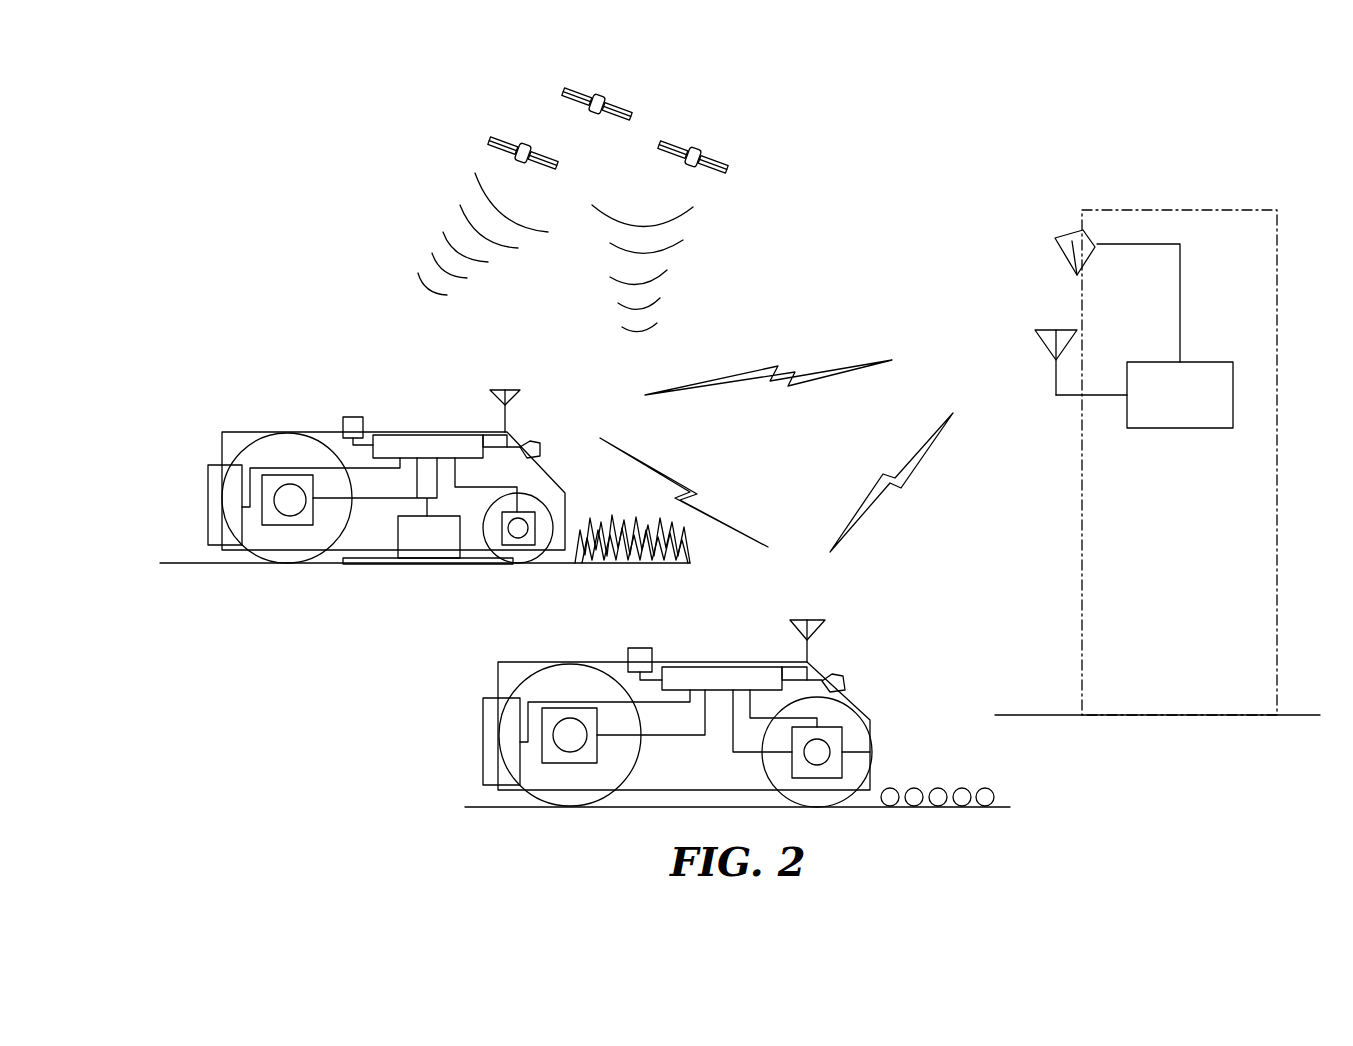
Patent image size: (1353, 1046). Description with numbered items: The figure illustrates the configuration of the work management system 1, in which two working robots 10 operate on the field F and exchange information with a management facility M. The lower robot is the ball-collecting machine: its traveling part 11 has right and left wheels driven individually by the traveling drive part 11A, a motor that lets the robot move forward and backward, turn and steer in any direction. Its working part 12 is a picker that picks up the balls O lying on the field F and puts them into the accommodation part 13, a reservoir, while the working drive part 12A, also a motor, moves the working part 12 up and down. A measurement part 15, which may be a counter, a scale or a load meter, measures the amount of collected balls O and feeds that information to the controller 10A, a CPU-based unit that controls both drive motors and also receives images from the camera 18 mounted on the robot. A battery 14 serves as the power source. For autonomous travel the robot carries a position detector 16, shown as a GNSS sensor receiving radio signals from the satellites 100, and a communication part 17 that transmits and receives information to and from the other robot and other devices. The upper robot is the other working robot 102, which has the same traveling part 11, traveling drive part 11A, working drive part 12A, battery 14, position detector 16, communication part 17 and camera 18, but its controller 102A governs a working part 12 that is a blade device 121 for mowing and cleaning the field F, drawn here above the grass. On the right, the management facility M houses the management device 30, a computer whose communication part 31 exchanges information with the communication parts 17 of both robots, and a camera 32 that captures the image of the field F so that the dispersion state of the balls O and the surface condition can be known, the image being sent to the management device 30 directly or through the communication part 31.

The work management system 1 is at (898, 226).
The satellites 100 is at (728, 78).
The management facility M is at (1170, 210).
The management device 30 is at (1233, 395).
The communication part 31 is at (1050, 328).
The camera 32 is at (1063, 268).
The working robot 10 is at (240, 428).
The working robot 102 is at (508, 590).
The controller 10A is at (445, 435).
The controller 102A is at (590, 514).
The traveling part 11 is at (248, 438).
The traveling drive part 11A is at (290, 515).
The working part 12 is at (365, 566).
The blade device 121 is at (637, 682).
The working drive part 12A is at (397, 528).
The accommodation part 13 is at (653, 700).
The battery 14 is at (208, 503).
The measurement part 15 is at (870, 752).
The position detector 16 is at (350, 416).
The communication part 17 is at (515, 392).
The camera 18 is at (540, 450).
The field F is at (603, 520).
The balls O is at (965, 790).